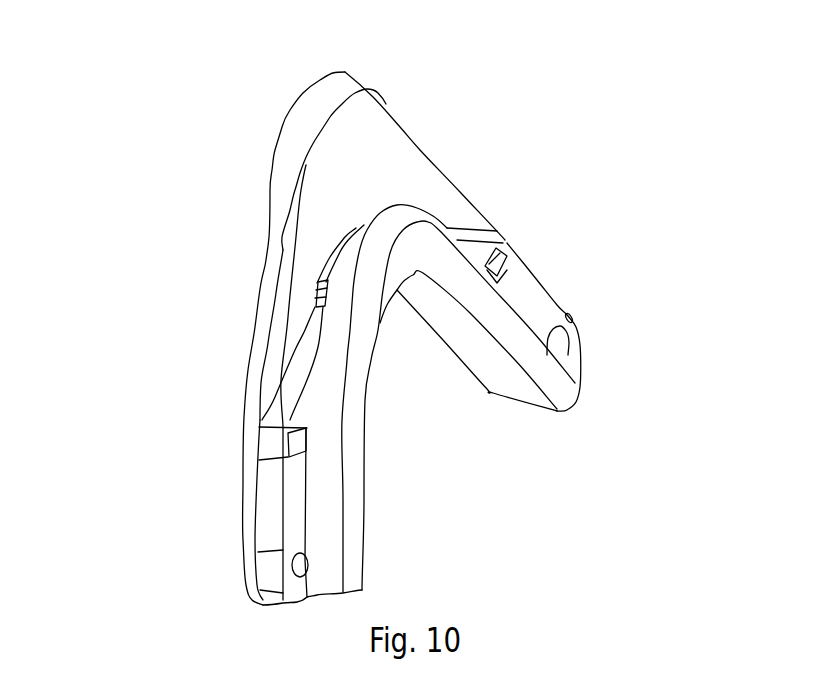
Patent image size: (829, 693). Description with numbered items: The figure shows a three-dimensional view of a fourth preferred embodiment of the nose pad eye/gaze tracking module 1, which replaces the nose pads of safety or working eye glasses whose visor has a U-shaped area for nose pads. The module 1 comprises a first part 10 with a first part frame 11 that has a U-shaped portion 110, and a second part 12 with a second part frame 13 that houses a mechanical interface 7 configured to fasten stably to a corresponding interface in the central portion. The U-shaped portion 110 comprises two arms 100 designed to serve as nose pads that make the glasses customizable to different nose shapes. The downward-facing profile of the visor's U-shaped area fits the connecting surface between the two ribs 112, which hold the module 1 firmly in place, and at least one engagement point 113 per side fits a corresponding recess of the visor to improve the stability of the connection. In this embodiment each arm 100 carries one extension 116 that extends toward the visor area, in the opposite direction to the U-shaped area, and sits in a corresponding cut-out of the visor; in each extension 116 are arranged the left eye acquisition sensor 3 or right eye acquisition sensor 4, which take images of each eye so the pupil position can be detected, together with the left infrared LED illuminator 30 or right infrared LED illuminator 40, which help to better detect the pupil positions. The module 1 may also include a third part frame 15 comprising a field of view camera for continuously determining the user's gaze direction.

The nose pad eye/gaze tracking module 1 is at (577, 211).
The left eye acquisition sensor 3 is at (505, 260).
The right eye acquisition sensor 4 is at (290, 446).
The mechanical interface 7 is at (363, 203).
The first part 10 is at (210, 425).
The first part frame 11 is at (240, 393).
The second part 12 is at (470, 165).
The second part frame 13 is at (420, 187).
The third part frame 15 is at (345, 132).
The left infrared LED illuminator 30 is at (565, 340).
The right infrared LED illuminator 40 is at (292, 571).
The arm 100 is at (510, 373).
The U-shaped portion 110 is at (240, 362).
The rib 112 is at (363, 238).
The engagement point 113 is at (277, 547).
The extension 116 is at (525, 287).